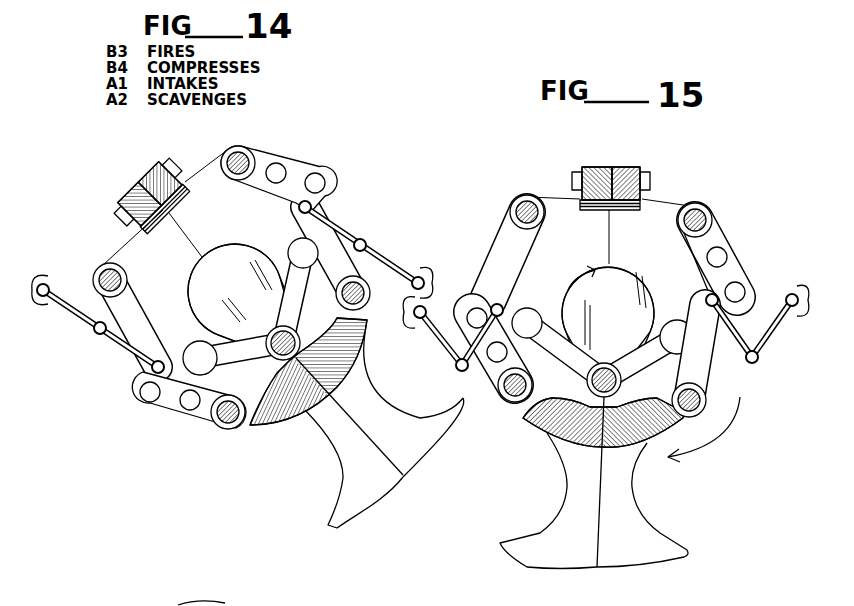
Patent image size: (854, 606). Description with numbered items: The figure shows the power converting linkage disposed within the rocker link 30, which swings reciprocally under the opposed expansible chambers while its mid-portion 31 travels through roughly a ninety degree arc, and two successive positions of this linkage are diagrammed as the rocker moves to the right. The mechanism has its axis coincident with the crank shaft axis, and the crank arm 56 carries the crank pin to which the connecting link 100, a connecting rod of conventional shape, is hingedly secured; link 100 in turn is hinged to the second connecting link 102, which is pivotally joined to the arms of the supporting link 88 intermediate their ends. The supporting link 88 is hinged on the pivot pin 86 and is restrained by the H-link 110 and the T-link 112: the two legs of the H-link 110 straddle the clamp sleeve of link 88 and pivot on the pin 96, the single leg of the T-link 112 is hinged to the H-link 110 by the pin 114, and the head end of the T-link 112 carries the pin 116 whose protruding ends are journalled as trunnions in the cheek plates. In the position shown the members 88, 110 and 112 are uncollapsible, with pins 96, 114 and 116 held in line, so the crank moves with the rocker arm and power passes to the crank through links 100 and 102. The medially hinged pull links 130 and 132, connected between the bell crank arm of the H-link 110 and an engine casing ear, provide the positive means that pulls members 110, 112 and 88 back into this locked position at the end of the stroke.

In FIG. 14, the rocker link 30 is at (420, 446).
In FIG. 15, the rocker link 30 is at (635, 553).
In FIG. 14, the mid-portion 31 is at (373, 490).
In FIG. 15, the mid-portion 31 is at (575, 553).
In FIG. 15, the crank arm 56 is at (634, 340).
In FIG. 15, the pivot pin 86 is at (510, 404).
In FIG. 14, the supporting link 88 is at (125, 360).
In FIG. 15, the supporting link 88 is at (712, 360).
In FIG. 14, the pin 96 is at (318, 183).
In FIG. 14, the connecting link 100 is at (250, 352).
In FIG. 15, the connecting link 100 is at (663, 300).
In FIG. 14, the connecting link 102 is at (180, 350).
In FIG. 15, the connecting link 102 is at (680, 325).
In FIG. 14, the H-link 110 is at (170, 402).
In FIG. 15, the H-link 110 is at (727, 272).
In FIG. 14, the T-link 112 is at (210, 413).
In FIG. 15, the T-link 112 is at (716, 245).
In FIG. 14, the pin 114 is at (277, 171).
In FIG. 15, the pin 114 is at (720, 257).
In FIG. 14, the pin 116 is at (226, 160).
In FIG. 15, the pin 116 is at (703, 212).
In FIG. 14, the pull link 130 is at (124, 326).
In FIG. 15, the pull link 130 is at (768, 296).
In FIG. 14, the pull link 132 is at (70, 307).
In FIG. 15, the pull link 132 is at (781, 320).